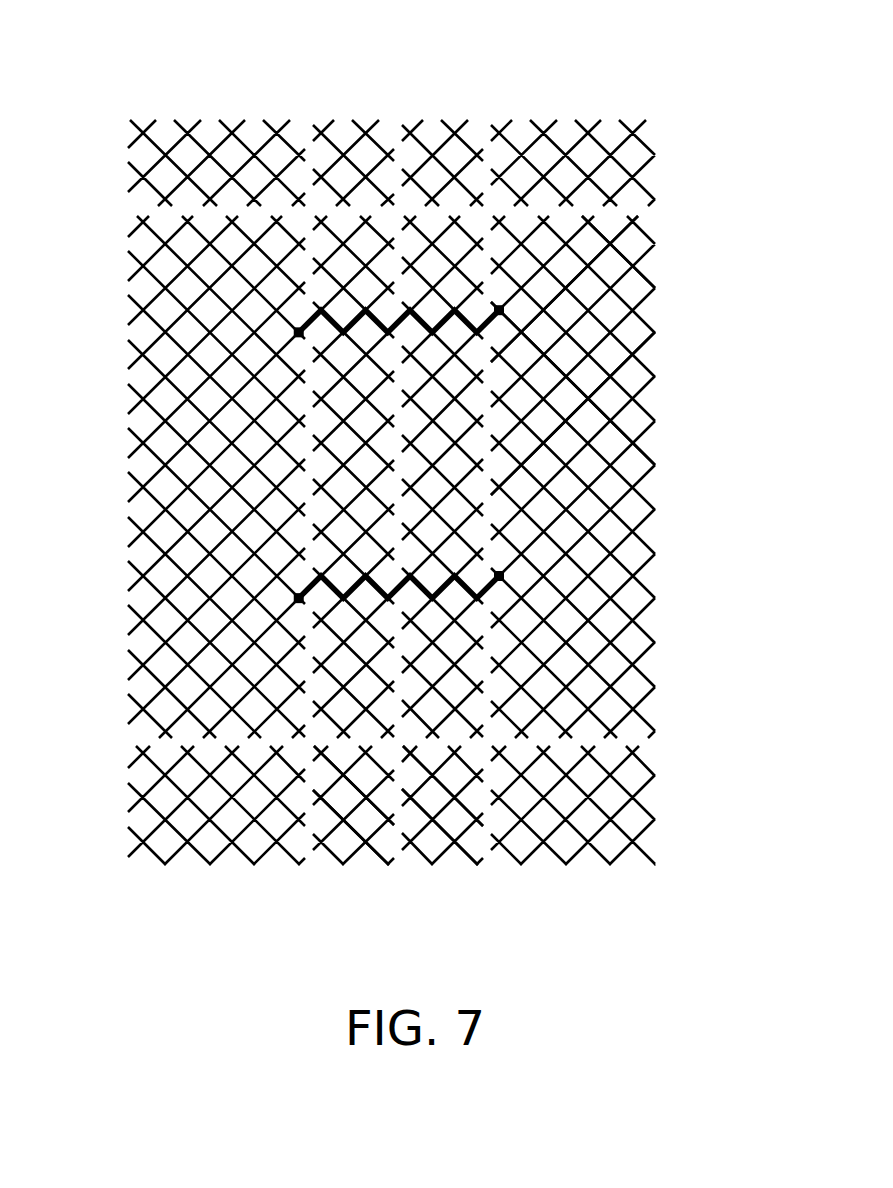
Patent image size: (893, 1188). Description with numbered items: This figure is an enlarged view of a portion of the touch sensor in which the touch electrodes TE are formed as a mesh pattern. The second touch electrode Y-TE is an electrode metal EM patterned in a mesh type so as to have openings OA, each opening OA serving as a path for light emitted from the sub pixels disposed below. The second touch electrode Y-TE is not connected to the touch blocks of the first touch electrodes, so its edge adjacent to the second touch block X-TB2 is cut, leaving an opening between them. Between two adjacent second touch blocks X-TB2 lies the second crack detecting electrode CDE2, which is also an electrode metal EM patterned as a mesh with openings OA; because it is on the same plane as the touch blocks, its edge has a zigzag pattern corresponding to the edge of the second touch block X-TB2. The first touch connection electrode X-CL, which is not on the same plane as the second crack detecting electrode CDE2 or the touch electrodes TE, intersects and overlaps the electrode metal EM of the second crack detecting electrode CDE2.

The touch electrode TE is at (396, 478).
The second touch electrode Y-TE is at (582, 130).
The second touch block X-TB2 is at (133, 710).
The first touch connection electrode X-CL is at (298, 333).
The second crack detecting electrode CDE2 is at (468, 865).
The electrode metal EM is at (582, 254).
The opening OA is at (610, 363).